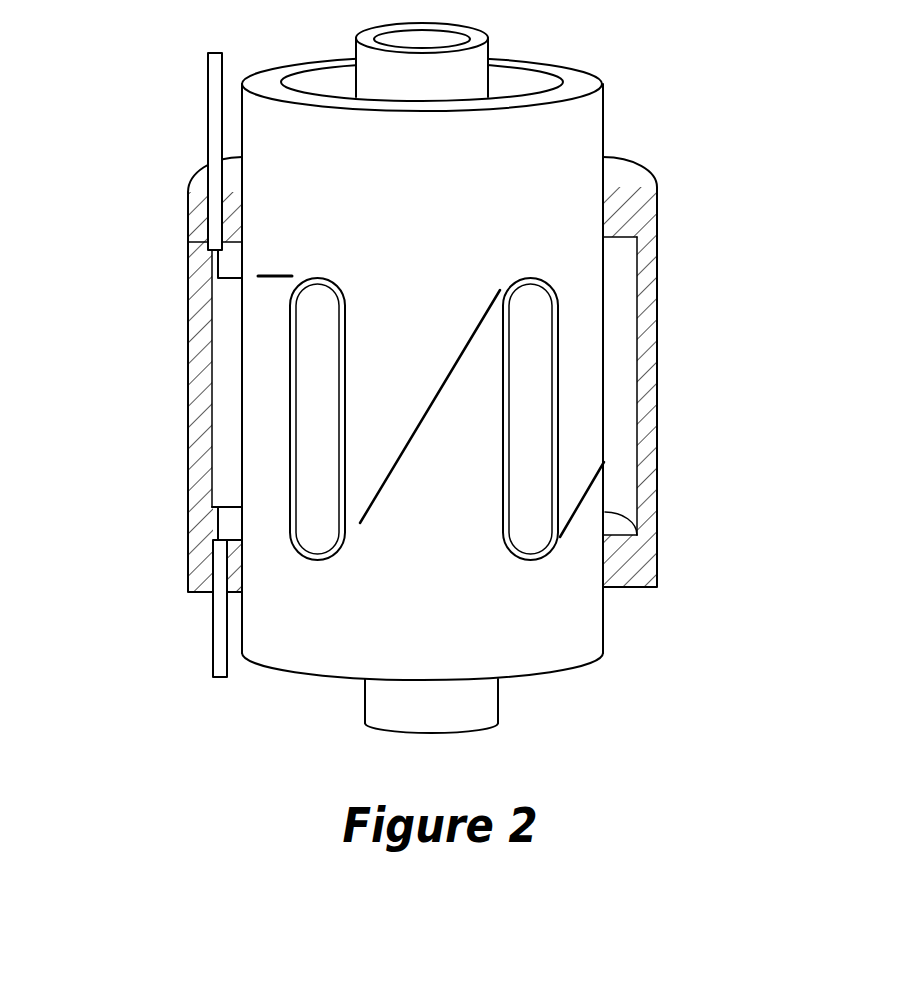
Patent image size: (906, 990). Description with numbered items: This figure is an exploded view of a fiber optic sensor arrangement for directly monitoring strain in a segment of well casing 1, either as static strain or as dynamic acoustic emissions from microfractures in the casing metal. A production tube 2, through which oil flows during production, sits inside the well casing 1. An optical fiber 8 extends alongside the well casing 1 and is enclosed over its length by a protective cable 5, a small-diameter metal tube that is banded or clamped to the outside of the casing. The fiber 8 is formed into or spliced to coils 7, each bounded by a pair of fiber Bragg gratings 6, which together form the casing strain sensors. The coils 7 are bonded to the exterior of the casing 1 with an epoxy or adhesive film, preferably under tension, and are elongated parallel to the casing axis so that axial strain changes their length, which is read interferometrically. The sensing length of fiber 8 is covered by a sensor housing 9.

The well casing 1 is at (568, 140).
The production tube 2 is at (455, 65).
The protective cable 5 is at (207, 90).
The fiber Bragg gratings 6 is at (362, 525).
The coils 7 is at (558, 397).
The optical fiber 8 is at (222, 275).
The sensor housing 9 is at (657, 217).